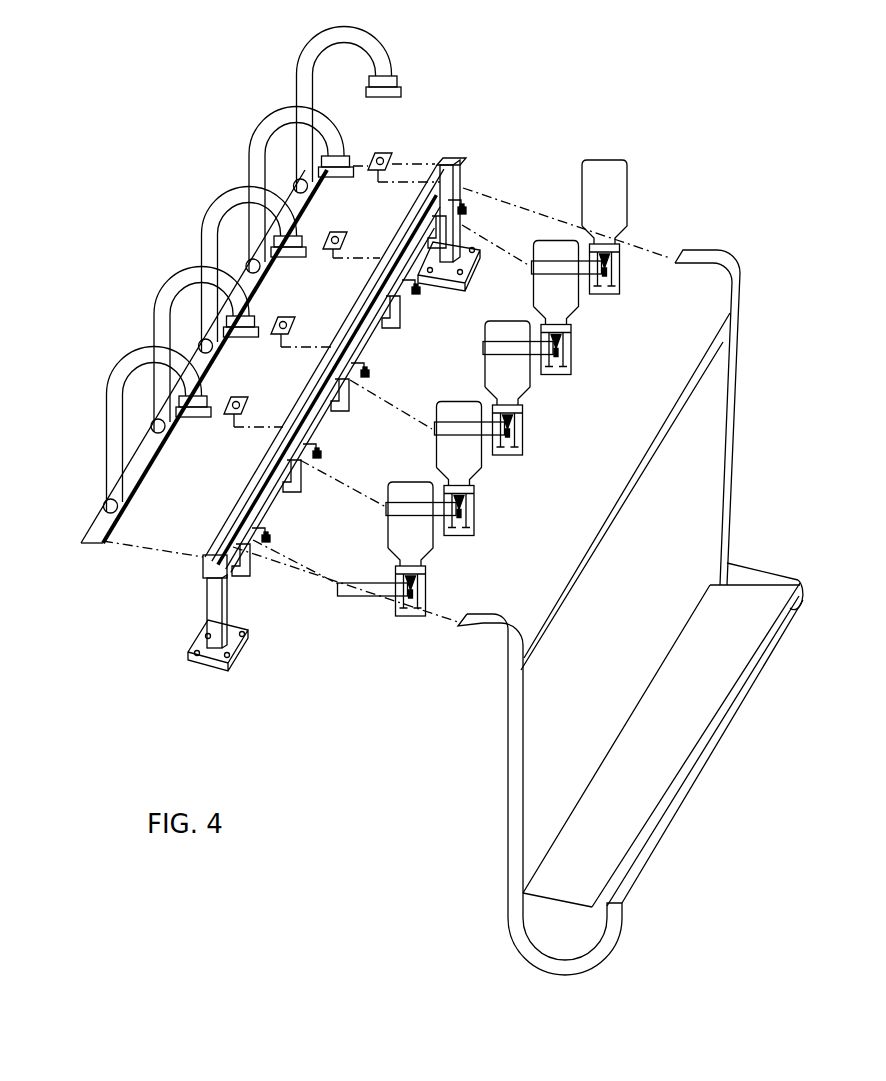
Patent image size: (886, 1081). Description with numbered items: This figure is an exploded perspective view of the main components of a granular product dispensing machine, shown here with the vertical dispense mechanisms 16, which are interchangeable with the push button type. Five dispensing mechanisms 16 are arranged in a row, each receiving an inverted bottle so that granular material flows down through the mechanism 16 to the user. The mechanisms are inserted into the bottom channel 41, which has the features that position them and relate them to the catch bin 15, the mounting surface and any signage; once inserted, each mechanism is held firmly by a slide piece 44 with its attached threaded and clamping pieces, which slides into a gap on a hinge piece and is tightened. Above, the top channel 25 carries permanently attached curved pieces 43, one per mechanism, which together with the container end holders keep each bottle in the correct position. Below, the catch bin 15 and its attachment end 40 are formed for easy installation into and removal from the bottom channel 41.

The catch bin 15 is at (498, 815).
The dispensing mechanism 16 is at (627, 258).
The top channel 25 is at (82, 527).
The attachment end 40 is at (483, 623).
The bottom channel 41 is at (200, 603).
The curved piece 43 is at (378, 53).
The slide piece 44 is at (392, 145).